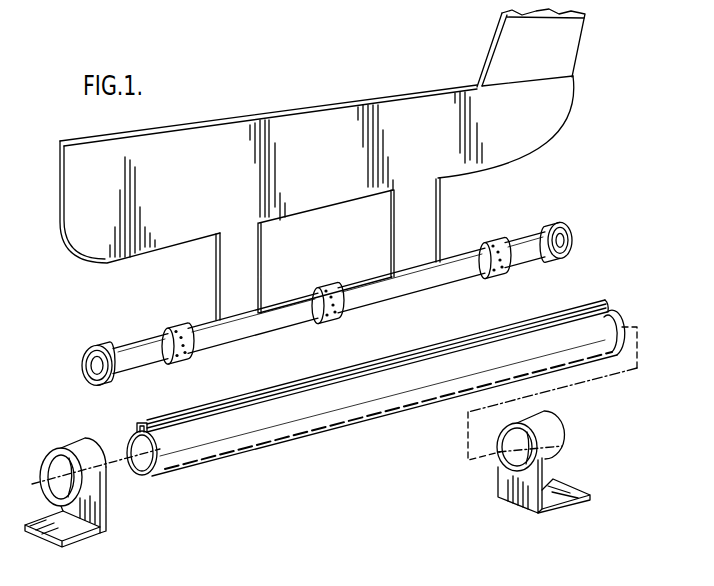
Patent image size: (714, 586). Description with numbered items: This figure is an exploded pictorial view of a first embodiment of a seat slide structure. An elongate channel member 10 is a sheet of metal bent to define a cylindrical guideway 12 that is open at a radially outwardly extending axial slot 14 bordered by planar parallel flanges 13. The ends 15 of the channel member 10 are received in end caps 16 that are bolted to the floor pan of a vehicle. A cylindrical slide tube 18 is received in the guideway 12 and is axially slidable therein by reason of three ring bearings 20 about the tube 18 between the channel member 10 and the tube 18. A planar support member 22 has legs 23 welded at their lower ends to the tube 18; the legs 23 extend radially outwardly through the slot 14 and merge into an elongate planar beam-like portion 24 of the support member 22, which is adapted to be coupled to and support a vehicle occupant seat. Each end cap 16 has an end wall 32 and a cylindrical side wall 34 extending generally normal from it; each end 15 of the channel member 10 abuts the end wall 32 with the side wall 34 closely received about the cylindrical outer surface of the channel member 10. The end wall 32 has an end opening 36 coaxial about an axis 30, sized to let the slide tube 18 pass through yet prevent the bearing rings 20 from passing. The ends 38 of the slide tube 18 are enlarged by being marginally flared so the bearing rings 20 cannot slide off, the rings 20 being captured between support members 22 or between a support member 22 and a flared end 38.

The elongate channel member 10 is at (298, 445).
The cylindrical guideway 12 is at (148, 480).
The planar parallel flanges 13 is at (132, 427).
The axial slot 14 is at (139, 421).
The ends of channel member 15 is at (135, 472).
The end cap 16 is at (322, 452).
The cylindrical slide tube 18 is at (288, 323).
The ring bearing 20 is at (170, 324).
The planar support member 22 is at (553, 149).
The legs of support member 23 is at (251, 272).
The elongate planar beam-like portion 24 is at (323, 176).
The axis 30 is at (72, 513).
The end wall 32 is at (44, 460).
The cylindrical side wall 34 is at (77, 446).
The end opening 36 is at (52, 488).
The flared end of slide tube 38 is at (96, 344).